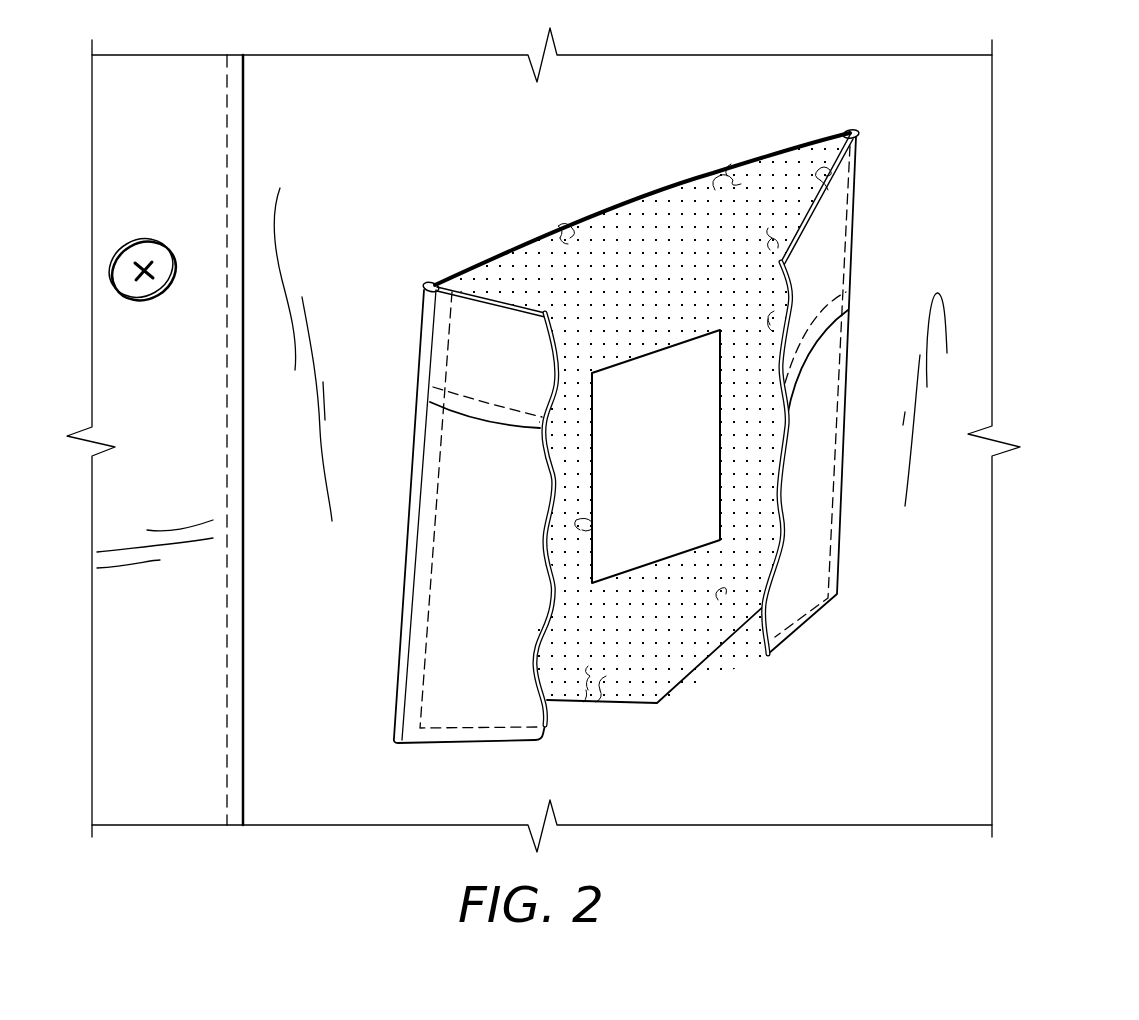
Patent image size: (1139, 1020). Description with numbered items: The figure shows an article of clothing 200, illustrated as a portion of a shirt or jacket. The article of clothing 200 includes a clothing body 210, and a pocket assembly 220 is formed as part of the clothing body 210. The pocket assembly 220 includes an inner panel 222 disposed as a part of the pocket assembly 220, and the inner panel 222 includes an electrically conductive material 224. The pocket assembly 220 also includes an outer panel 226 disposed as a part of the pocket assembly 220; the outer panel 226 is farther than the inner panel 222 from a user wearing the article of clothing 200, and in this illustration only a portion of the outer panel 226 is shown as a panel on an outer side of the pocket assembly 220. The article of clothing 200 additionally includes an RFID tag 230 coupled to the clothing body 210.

The article of clothing 200 is at (1050, 80).
The clothing body 210 is at (315, 54).
The pocket assembly 220 is at (627, 453).
The inner panel 222 is at (765, 155).
The electrically conductive material 224 is at (597, 250).
The outer panel 226 is at (465, 744).
The RFID tag 230 is at (638, 447).